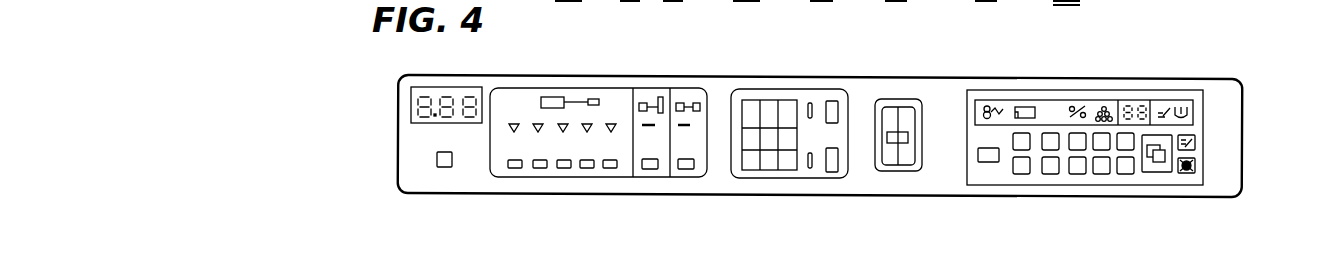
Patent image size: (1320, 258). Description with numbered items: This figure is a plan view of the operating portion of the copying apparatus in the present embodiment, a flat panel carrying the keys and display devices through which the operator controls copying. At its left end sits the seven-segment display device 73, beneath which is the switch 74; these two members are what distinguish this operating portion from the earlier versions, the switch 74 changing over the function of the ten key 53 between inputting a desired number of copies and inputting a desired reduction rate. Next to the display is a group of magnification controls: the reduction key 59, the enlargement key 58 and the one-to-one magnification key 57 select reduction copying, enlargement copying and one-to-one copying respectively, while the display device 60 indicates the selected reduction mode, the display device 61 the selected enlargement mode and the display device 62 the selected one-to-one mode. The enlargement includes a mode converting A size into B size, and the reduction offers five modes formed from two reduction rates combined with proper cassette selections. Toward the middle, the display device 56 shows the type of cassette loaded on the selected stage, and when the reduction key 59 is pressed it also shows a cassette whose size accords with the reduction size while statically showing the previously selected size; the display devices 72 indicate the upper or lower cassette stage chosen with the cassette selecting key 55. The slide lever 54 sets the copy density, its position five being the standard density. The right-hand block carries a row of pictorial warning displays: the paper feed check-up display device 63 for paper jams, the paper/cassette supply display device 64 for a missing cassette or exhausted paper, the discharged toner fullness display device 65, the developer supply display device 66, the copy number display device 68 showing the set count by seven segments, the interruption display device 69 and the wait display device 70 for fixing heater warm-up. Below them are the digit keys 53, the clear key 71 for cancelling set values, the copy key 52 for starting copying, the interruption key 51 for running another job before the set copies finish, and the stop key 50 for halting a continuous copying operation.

The stop key 50 is at (1187, 175).
The interruption key 51 is at (1198, 152).
The copy key 52 is at (1153, 165).
The digit keys 53 is at (1075, 173).
The slide lever 54 is at (882, 173).
The cassette selecting key 55 is at (828, 172).
The cassette type display device 56 is at (757, 170).
The one-to-one magnification key 57 is at (687, 169).
The enlargement key 58 is at (648, 169).
The reduction key 59 is at (563, 169).
The reduction mode display device 60 is at (573, 123).
The enlargement mode display device 61 is at (648, 118).
The one-to-one magnification display device 62 is at (685, 128).
The paper feed check-up display device 63 is at (987, 108).
The paper/cassette supply display device 64 is at (1028, 107).
The discharged toner fullness display device 65 is at (1072, 107).
The developer supply display device 66 is at (1107, 108).
The copy number display device 68 is at (1133, 107).
The interruption display device 69 is at (1167, 107).
The wait display device 70 is at (1187, 110).
The clear key 71 is at (987, 162).
The cassette stage display devices 72 is at (812, 153).
The 7-segment display device 73 is at (433, 95).
The switch 74 is at (445, 168).